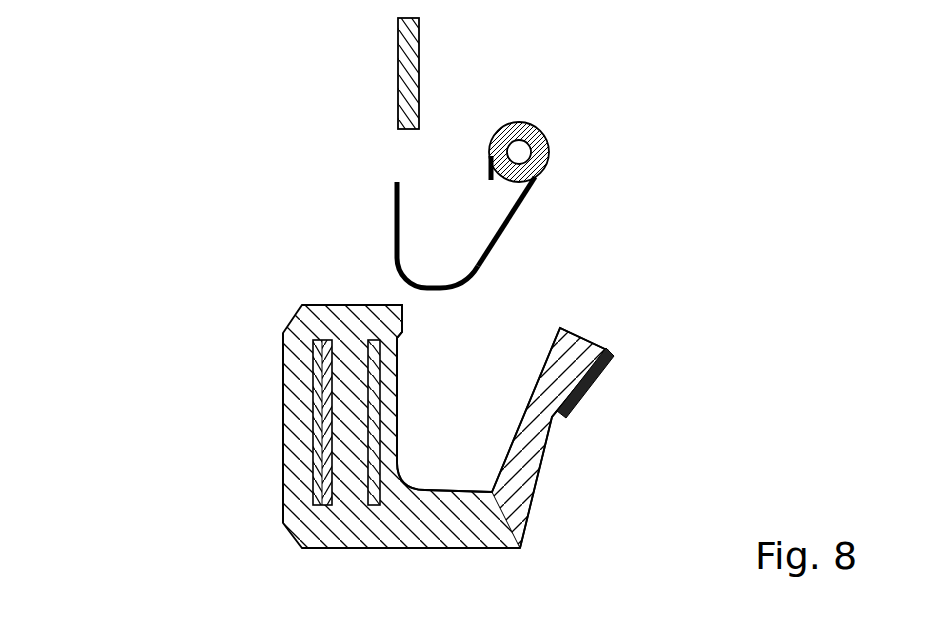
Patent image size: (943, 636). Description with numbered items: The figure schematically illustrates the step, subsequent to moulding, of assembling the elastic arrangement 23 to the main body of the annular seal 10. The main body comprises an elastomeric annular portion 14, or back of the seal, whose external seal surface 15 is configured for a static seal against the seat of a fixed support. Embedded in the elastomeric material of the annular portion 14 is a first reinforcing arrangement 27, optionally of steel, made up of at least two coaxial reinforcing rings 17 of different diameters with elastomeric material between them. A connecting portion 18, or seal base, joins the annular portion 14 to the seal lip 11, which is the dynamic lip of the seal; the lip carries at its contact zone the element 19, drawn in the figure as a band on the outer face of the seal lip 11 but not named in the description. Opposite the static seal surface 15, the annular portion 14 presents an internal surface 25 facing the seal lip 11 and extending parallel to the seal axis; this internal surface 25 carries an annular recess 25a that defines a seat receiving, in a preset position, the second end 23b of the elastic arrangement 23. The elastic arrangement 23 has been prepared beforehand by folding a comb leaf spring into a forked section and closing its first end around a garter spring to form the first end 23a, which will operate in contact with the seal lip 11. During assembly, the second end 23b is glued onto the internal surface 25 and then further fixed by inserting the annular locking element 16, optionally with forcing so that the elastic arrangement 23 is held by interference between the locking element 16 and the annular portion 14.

The annular seal 10 is at (177, 102).
The seal lip 11 is at (533, 437).
The annular portion 14 is at (278, 443).
The seal surface 15 is at (283, 488).
The annular locking element 16 is at (402, 40).
The reinforcing rings 17 is at (322, 377).
The connecting portion 18 is at (407, 522).
The sealing edge coating 19 is at (585, 392).
The elastic arrangement 23 is at (559, 156).
The first end of the elastic arrangement 23a is at (537, 183).
The second end of the elastic arrangement 23b is at (396, 210).
The internal surface 25 is at (398, 357).
The annular recess 25a is at (400, 412).
The first reinforcing arrangement 27 is at (333, 340).